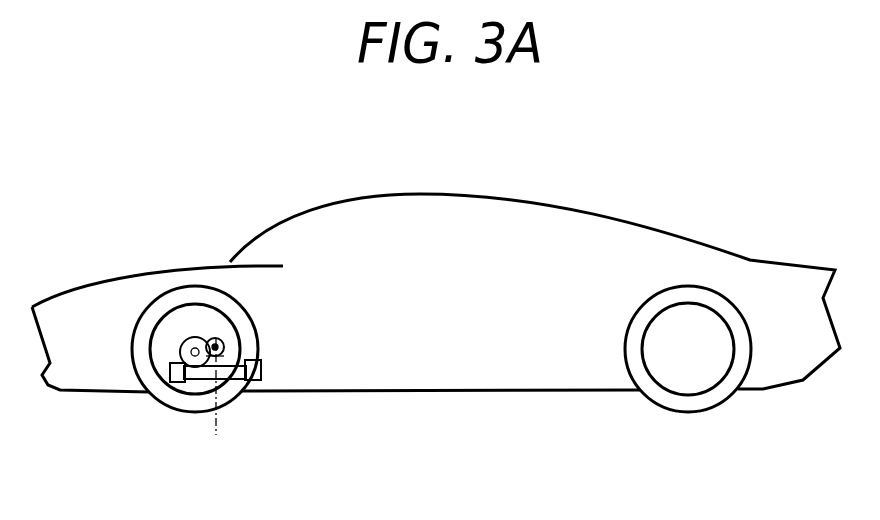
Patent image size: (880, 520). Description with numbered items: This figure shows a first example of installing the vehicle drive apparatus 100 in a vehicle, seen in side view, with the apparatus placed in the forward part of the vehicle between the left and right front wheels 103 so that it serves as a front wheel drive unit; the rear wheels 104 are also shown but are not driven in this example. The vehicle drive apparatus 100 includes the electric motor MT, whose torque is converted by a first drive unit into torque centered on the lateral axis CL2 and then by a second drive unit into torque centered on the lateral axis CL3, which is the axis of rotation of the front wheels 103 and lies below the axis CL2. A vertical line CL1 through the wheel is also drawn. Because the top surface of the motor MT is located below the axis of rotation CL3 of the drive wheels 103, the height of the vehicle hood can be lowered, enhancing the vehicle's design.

The vehicle drive apparatus 100 is at (229, 339).
The front wheels 103 is at (177, 410).
The rear wheels 104 is at (697, 413).
The vertical center line of wheel CL1 is at (214, 404).
The lateral axis CL2 is at (215, 338).
The lateral axis CL3 is at (188, 339).
The electric motor MT is at (238, 388).